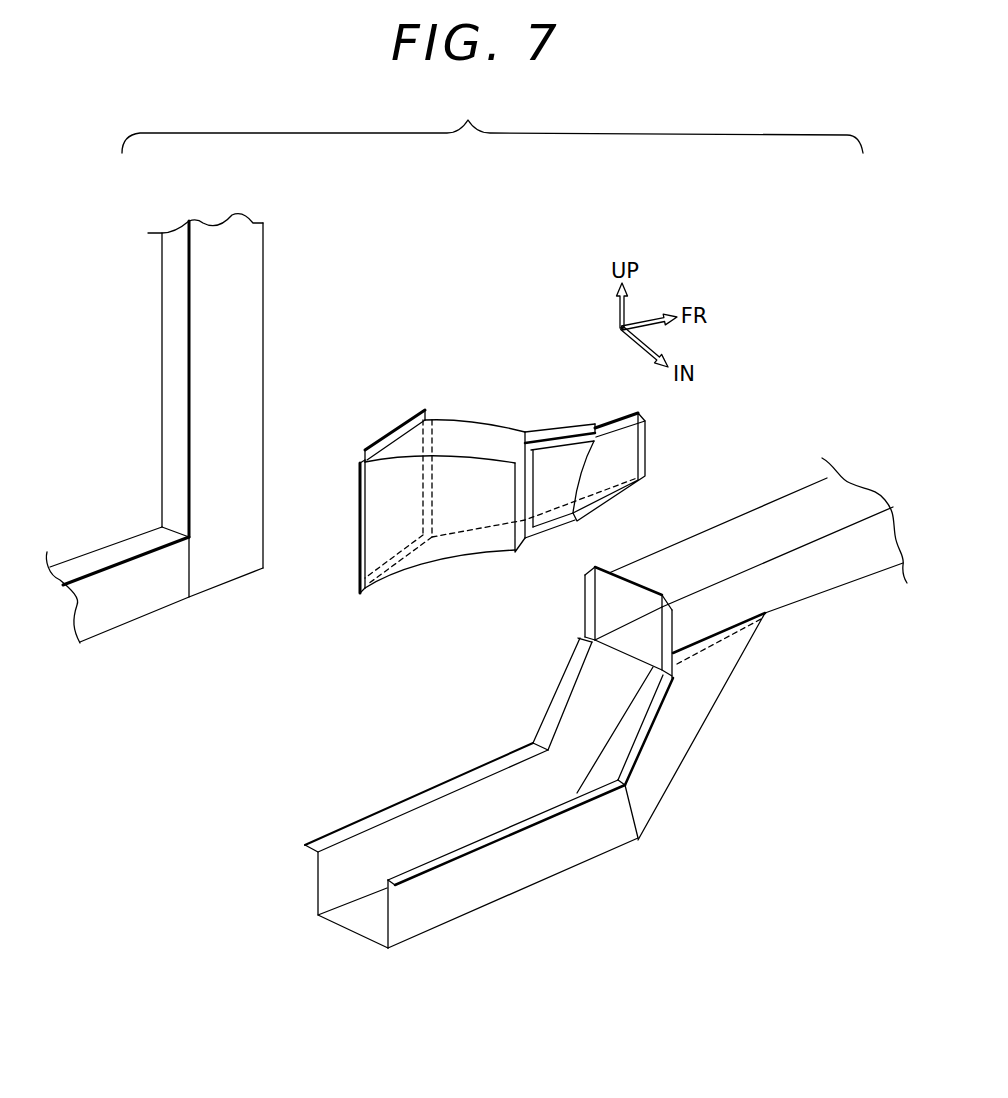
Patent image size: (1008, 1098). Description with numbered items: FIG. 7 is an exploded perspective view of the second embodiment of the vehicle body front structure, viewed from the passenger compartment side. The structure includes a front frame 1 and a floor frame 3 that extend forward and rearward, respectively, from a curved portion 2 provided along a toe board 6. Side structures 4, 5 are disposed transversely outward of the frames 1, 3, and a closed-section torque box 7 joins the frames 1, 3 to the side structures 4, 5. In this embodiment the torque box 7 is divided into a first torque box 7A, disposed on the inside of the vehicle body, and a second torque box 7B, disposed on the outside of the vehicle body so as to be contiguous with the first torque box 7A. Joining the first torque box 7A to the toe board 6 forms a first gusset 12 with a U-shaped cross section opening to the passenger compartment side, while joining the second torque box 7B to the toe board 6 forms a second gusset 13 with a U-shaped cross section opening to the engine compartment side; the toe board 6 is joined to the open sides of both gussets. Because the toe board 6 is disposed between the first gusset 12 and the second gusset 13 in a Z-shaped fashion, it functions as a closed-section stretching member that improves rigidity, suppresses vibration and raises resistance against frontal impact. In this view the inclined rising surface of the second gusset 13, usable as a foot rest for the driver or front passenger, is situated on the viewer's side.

The front frame 1 is at (815, 583).
The curved portion 2 is at (695, 717).
The floor frame 3 is at (498, 880).
The side structure 4 is at (253, 297).
The side structure 5 is at (135, 605).
The toe board 6 is at (458, 420).
The torque box 7 is at (502, 494).
The first torque box 7A is at (573, 423).
The second torque box 7B is at (420, 572).
The first gusset 12 is at (555, 427).
The second gusset 13 is at (475, 547).